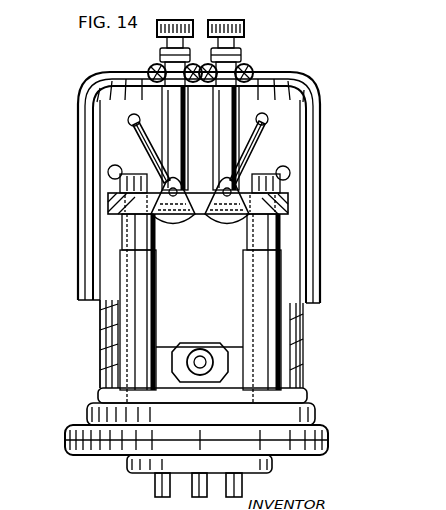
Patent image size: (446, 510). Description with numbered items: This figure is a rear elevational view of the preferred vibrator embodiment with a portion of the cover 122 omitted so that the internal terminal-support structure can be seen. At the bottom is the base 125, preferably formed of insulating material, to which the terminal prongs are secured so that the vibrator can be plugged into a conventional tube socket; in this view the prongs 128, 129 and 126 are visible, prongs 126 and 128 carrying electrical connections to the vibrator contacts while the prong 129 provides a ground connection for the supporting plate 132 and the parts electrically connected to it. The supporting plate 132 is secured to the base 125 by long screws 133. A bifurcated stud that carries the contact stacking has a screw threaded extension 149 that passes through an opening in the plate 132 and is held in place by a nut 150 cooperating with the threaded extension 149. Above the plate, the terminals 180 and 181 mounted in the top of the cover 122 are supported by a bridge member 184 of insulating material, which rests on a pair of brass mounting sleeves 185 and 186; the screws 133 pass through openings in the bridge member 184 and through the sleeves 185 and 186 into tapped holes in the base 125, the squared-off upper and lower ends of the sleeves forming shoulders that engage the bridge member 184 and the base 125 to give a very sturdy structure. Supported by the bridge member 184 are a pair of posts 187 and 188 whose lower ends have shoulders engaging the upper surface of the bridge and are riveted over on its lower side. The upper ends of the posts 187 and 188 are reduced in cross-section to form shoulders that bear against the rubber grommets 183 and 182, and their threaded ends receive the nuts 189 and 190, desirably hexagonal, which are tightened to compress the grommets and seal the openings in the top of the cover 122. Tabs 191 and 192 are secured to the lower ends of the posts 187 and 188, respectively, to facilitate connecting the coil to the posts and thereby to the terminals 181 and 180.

The cover 122 is at (83, 173).
The base 125 is at (86, 412).
The terminal prong 126 is at (243, 487).
The terminal prong 128 is at (155, 486).
The terminal prong 129 is at (200, 495).
The supporting plate 132 is at (104, 311).
The screws 133 is at (129, 173).
The screw threaded extension 149 is at (191, 346).
The nut 150 is at (198, 342).
The terminal 180 is at (240, 20).
The terminal 181 is at (167, 20).
The rubber grommet 182 is at (250, 73).
The rubber grommet 183 is at (150, 72).
The bridge member 184 is at (290, 201).
The mounting sleeve 185 is at (157, 280).
The mounting sleeve 186 is at (254, 278).
The post 187 is at (161, 103).
The post 188 is at (242, 103).
The nut 189 is at (160, 56).
The nut 190 is at (244, 62).
The tab 191 is at (183, 224).
The tab 192 is at (212, 226).